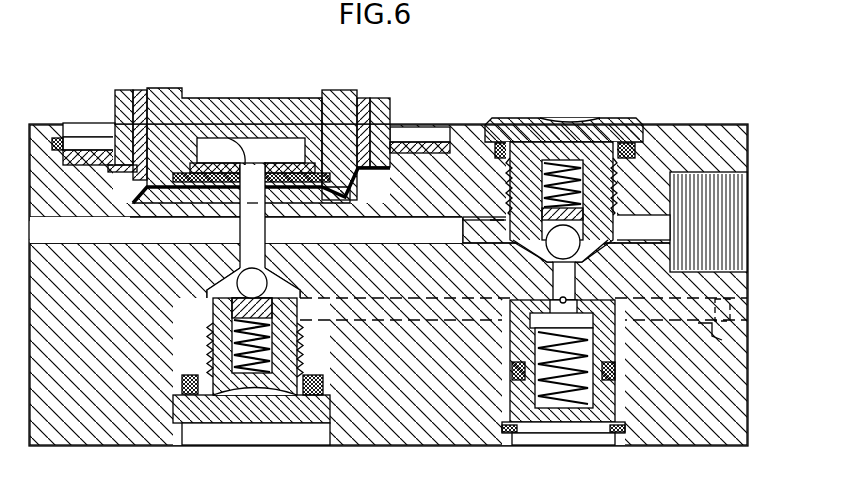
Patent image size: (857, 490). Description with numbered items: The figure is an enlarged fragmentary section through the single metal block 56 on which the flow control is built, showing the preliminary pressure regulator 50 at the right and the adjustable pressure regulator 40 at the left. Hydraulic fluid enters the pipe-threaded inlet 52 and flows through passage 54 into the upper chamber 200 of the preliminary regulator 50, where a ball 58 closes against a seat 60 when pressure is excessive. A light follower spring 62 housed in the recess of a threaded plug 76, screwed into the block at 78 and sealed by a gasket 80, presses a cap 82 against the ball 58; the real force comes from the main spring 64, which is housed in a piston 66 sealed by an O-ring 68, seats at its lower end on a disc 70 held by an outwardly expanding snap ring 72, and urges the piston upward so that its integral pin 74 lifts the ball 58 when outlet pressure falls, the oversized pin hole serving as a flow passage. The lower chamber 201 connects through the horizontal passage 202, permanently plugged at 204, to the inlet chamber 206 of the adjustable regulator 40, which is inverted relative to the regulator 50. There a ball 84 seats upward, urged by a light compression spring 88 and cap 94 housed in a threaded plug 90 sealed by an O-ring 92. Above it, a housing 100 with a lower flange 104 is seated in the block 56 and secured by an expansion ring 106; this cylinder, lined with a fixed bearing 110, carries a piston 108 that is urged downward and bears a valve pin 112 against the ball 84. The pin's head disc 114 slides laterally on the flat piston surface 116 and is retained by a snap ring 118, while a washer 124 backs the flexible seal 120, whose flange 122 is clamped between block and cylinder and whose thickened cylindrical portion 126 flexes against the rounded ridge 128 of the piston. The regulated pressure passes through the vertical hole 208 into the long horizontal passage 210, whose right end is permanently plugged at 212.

The adjustable pressure regulator 40 is at (370, 78).
The preliminary pressure regulator 50 is at (670, 448).
The inlet 52 is at (735, 203).
The passage 54 is at (645, 215).
The block 56 is at (382, 284).
The ball 58 is at (548, 254).
The seat 60 is at (583, 260).
The follower spring 62 is at (556, 166).
The main spring 64 is at (596, 351).
The piston 66 is at (510, 347).
The O-ring 68 is at (512, 373).
The disc 70 is at (624, 403).
The snap ring 72 is at (610, 431).
The pin 74 is at (571, 290).
The threaded plug 76 is at (622, 117).
The threaded connection 78 is at (617, 167).
The gasket 80 is at (636, 147).
The cap 82 is at (512, 214).
The ball 84 is at (240, 288).
The compression spring 88 is at (262, 375).
The threaded plug 90 is at (207, 425).
The O-ring 92 is at (325, 386).
The cap 94 is at (212, 310).
The housing 100 is at (130, 90).
The flange 104 is at (412, 142).
The expansion ring 106 is at (437, 137).
The piston 108 is at (338, 92).
The fixed bearing 110 is at (138, 90).
The valve pin 112 is at (266, 251).
The disc 114 is at (256, 130).
The piston surface 116 is at (279, 133).
The snap ring 118 is at (200, 172).
The flexible seal 120 is at (218, 172).
The flange 122 is at (394, 172).
The washer 124 is at (289, 177).
The cylindrical portion 126 is at (372, 195).
The rounded ridge 128 is at (157, 180).
The upper chamber 200 is at (589, 246).
The lower chamber 201 is at (610, 315).
The horizontal passage 202 is at (736, 345).
The plug 204 is at (748, 312).
The inlet chamber 206 is at (345, 240).
The vertical hole 208 is at (240, 254).
The horizontal passage 210 is at (106, 238).
The plug 212 is at (740, 238).